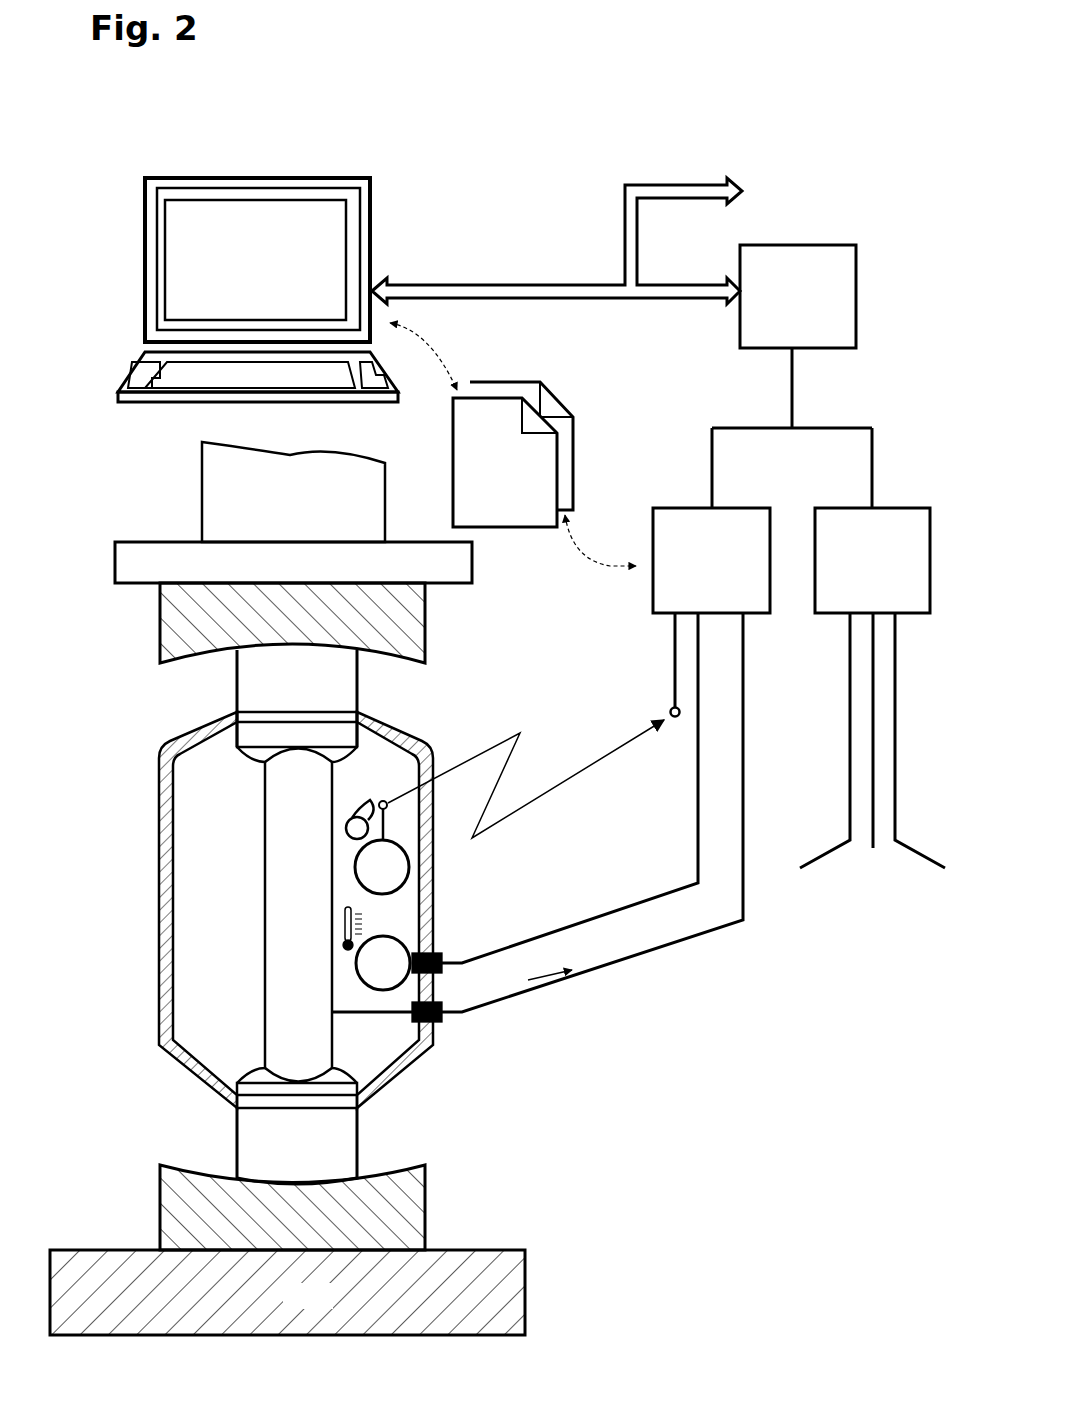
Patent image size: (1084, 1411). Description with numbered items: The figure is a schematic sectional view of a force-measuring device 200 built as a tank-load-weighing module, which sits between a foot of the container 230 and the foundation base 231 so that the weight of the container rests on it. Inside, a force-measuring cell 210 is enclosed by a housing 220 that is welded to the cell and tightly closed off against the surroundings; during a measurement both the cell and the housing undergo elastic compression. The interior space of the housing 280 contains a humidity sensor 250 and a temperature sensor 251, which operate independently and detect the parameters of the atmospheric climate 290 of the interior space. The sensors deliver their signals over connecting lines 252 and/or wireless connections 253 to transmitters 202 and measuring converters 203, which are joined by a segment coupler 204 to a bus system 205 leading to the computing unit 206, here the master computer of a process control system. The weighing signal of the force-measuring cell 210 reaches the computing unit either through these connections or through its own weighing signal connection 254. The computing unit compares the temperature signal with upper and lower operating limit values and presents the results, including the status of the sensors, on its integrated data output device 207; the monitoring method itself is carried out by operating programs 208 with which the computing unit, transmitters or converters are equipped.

The force-measuring device 200 is at (476, 1094).
The transmitter 202 is at (711, 560).
The measuring converter 203 is at (872, 688).
The segment coupler 204 is at (792, 376).
The bus system 205 is at (536, 284).
The computing unit 206 is at (278, 170).
The data output device 207 is at (187, 245).
The operating programs 208 is at (513, 444).
The force-measuring cell 210 is at (295, 876).
The housing 220 is at (158, 942).
The container 230 is at (293, 594).
The foundation base 231 is at (287, 1221).
The humidity sensor 250 is at (410, 867).
The temperature sensor 251 is at (402, 942).
The connecting line 252 is at (642, 898).
The wireless connection 253 is at (582, 773).
The weighing signal connection 254 is at (667, 947).
The interior space of the housing 280 is at (213, 967).
The atmospheric climate of the interior space 290 is at (352, 826).